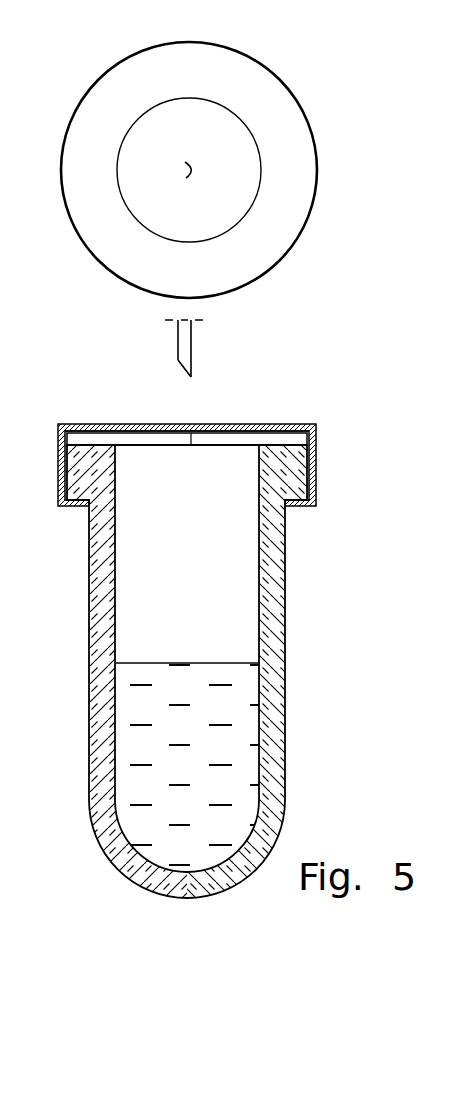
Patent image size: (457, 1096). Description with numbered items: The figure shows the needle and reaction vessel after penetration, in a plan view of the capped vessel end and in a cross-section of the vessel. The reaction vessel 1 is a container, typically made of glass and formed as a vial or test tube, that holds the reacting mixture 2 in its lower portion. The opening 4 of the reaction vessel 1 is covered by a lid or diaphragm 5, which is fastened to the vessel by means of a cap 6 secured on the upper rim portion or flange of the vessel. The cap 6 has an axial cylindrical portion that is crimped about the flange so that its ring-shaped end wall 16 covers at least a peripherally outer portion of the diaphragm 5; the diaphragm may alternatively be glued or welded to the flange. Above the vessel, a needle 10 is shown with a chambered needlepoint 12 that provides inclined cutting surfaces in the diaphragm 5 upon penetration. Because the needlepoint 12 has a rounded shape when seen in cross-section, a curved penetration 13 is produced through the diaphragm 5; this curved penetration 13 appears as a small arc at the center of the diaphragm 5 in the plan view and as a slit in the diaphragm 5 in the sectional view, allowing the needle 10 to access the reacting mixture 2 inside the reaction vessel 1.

The reaction vessel 1 is at (283, 580).
The reacting mixture 2 is at (230, 747).
The opening 4 is at (17, 877).
The diaphragm 5 is at (150, 213).
The cap 6 is at (65, 203).
The needle 10 is at (183, 353).
The chambered needlepoint 12 is at (183, 371).
The curved penetration 13 is at (193, 174).
The ring-shaped end wall 16 is at (290, 423).